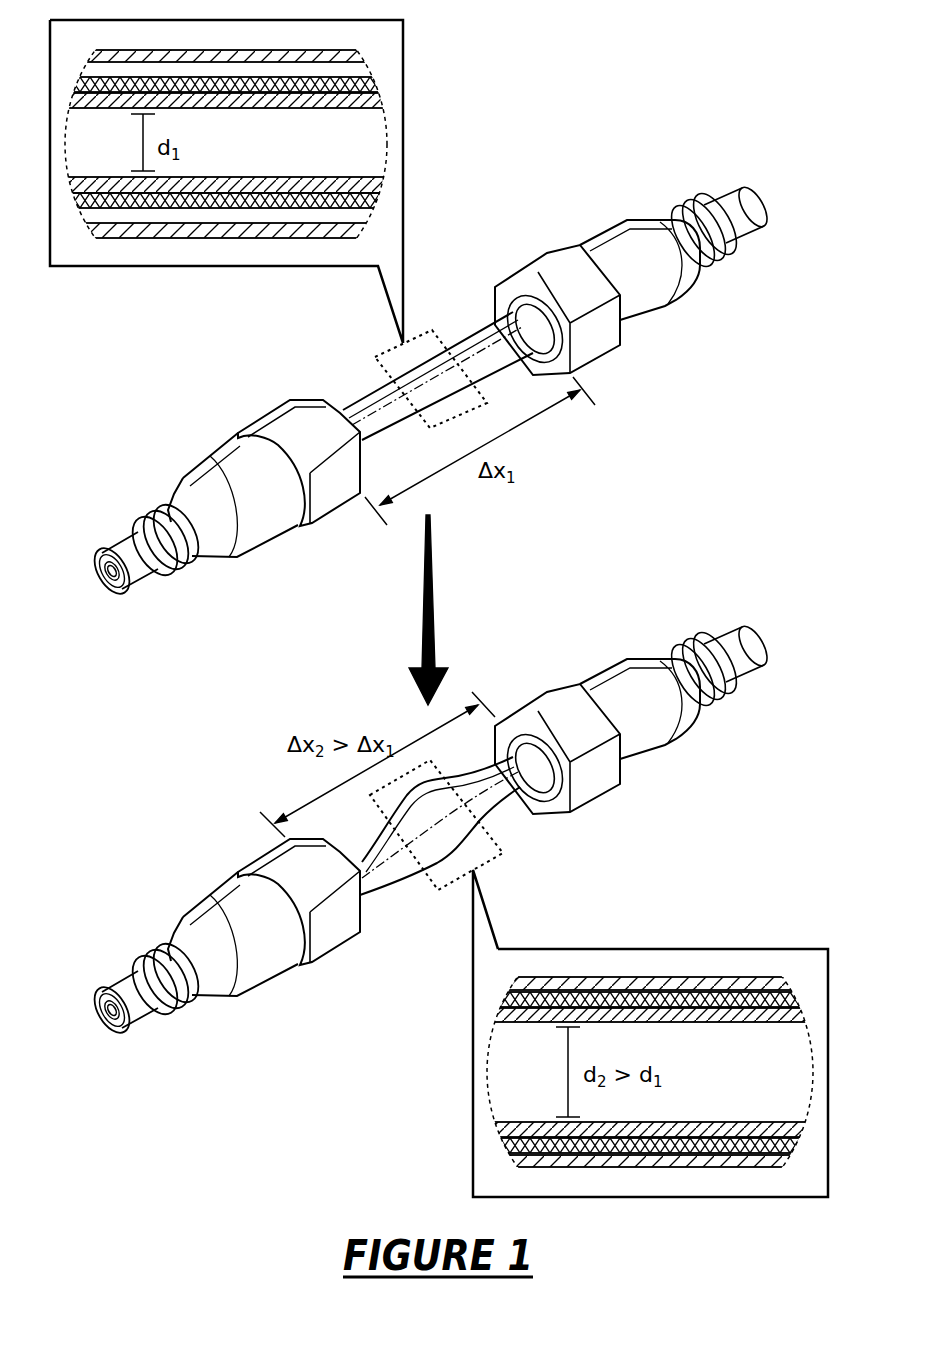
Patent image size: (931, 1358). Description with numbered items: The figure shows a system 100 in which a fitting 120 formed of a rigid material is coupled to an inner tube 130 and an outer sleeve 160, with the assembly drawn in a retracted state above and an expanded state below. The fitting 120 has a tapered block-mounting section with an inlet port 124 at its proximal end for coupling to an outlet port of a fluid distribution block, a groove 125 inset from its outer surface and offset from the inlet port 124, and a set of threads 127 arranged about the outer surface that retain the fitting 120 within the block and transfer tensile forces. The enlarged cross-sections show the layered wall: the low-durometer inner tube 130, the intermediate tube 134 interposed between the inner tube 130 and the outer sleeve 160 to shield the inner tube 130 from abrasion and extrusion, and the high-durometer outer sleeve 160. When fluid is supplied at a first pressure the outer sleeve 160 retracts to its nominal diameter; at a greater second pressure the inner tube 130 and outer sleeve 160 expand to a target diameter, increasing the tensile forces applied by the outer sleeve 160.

The system 100 is at (734, 104).
The fitting 120 is at (220, 449).
The inlet port 124 is at (104, 578).
The groove 125 is at (117, 541).
The set of threads 127 is at (146, 516).
The inner tube 130 is at (243, 107).
The intermediate tube 134 is at (235, 207).
The outer sleeve 160 is at (368, 402).